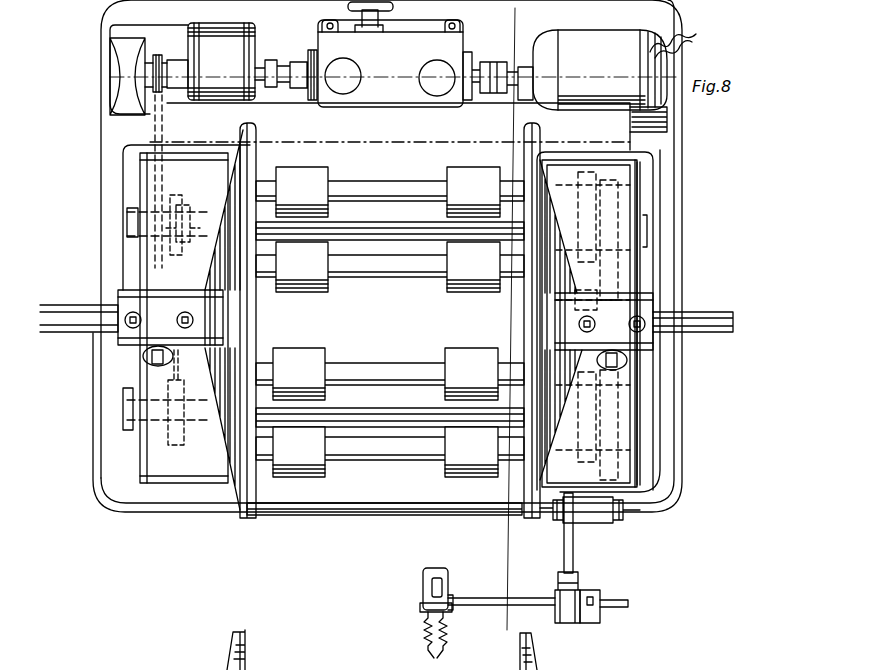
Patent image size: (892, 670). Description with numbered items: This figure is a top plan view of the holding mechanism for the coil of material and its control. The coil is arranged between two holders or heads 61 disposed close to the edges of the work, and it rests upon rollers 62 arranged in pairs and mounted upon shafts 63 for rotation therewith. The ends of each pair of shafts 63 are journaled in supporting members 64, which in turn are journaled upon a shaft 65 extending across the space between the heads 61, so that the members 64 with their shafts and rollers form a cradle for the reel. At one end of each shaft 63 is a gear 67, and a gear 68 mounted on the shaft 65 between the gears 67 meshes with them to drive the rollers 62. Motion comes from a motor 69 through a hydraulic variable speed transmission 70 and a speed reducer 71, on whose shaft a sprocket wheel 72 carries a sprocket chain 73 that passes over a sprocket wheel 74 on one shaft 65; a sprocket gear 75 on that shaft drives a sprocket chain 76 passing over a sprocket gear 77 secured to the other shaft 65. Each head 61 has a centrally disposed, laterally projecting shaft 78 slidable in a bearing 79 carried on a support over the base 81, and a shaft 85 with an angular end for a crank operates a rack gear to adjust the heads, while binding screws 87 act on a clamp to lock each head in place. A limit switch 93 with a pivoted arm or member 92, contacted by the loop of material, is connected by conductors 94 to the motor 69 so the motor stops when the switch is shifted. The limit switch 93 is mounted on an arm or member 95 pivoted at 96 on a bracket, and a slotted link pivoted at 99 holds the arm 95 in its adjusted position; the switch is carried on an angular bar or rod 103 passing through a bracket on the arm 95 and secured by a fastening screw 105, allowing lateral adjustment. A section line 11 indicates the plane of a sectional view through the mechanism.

The section line 11- 11 is at (490, 8).
The holders or heads 61 is at (248, 515).
The rollers 62 is at (311, 172).
The shafts 63 is at (397, 191).
The supporting members 64 is at (645, 174).
The shaft 65 is at (305, 239).
The gear 67 is at (584, 178).
The gear 68 is at (592, 238).
The motor 69 is at (600, 81).
The hydraulic variable speed transmission 70 is at (425, 54).
The speed reducer 71 is at (252, 61).
The sprocket wheel 72 is at (160, 62).
The sprocket chain 73 is at (160, 97).
The sprocket wheel 74 is at (165, 193).
The sprocket gear 75 is at (183, 205).
The sprocket chain 76 is at (178, 270).
The sprocket gear 77 is at (180, 437).
The shaft 78 is at (59, 304).
The bearing 79 is at (118, 342).
The base 81 is at (142, 166).
The shaft 85 is at (152, 365).
The binding screws 87 is at (177, 320).
The arm or member 92 is at (424, 586).
The limit switch 93 is at (420, 605).
The conductors 94 is at (686, 34).
The arm or member 95 is at (578, 573).
The pivot 96 is at (625, 521).
The pivot 99 is at (435, 641).
The bar or rod 103 is at (477, 598).
The fastening screw 105 is at (600, 597).